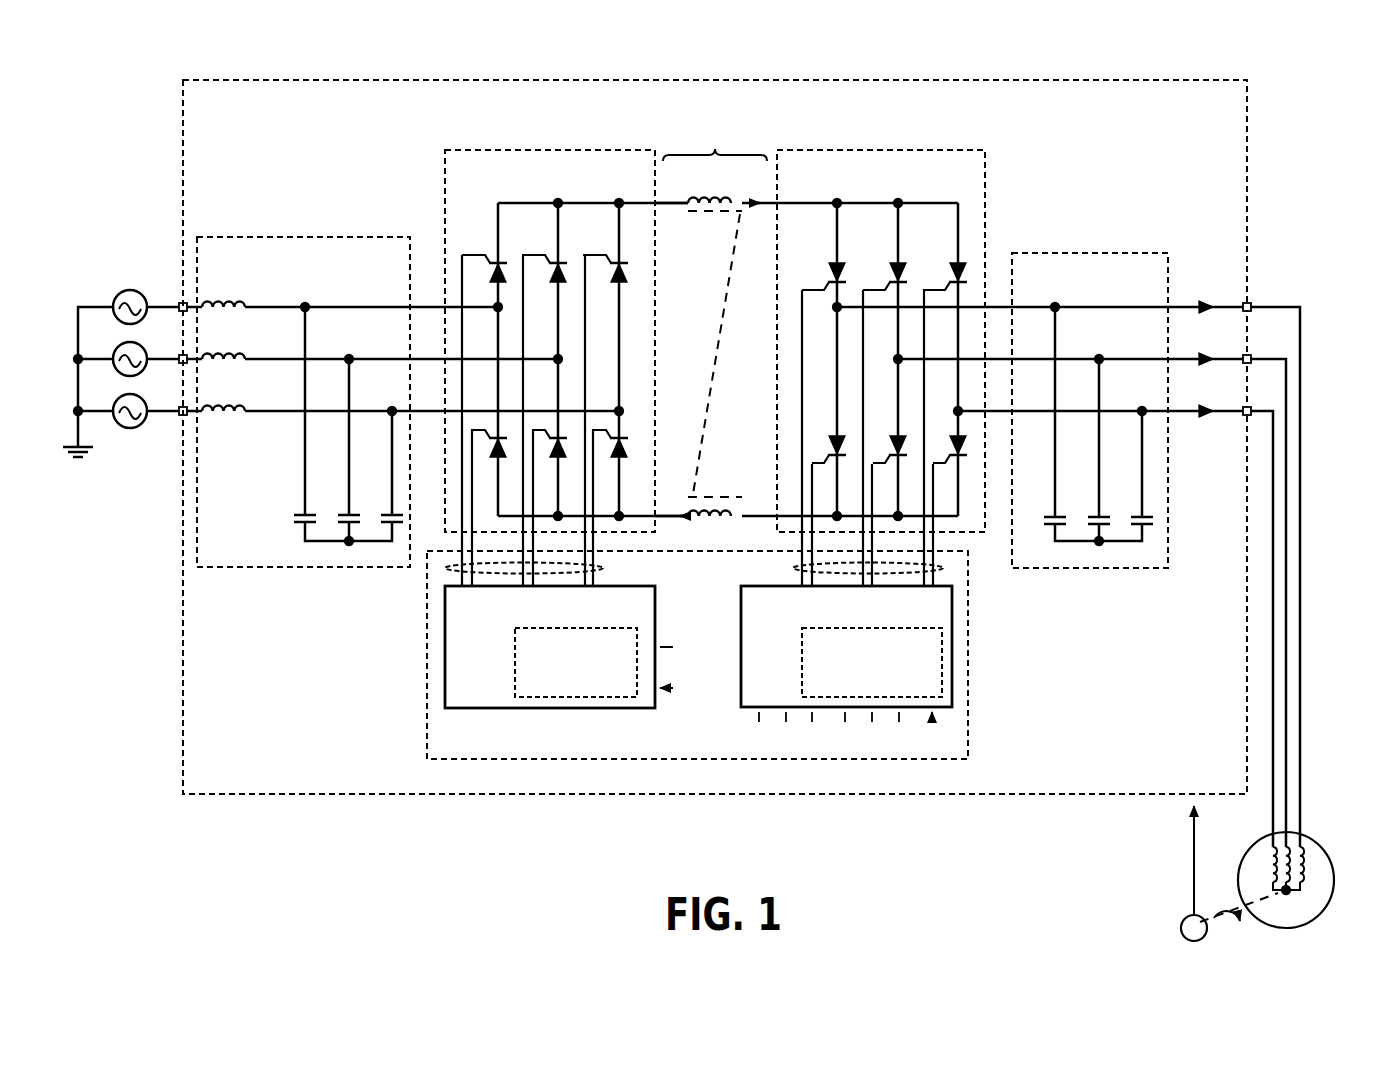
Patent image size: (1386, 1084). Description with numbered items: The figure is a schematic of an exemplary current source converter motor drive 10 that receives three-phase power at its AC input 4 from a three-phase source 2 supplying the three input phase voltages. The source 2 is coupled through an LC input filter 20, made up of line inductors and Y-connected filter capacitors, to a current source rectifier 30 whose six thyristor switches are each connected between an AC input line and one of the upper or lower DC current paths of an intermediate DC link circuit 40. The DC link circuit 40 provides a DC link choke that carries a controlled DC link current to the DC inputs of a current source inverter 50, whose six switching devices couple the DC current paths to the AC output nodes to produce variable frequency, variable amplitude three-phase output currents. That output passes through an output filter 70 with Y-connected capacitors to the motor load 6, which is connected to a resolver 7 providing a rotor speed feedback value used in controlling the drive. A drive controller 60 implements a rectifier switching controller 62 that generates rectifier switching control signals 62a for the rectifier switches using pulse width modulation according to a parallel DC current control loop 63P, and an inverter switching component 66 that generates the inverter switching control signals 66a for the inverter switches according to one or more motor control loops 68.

The three-phase source 2 is at (110, 289).
The three-phase AC input 4 is at (170, 427).
The motor load 6 is at (1334, 877).
The resolver 7 is at (1181, 930).
The current source converter (CSC) motor drive 10 is at (262, 80).
The LC input filter 20 is at (304, 237).
The current source rectifier 30 is at (549, 150).
The intermediate DC link circuit 40 is at (715, 149).
The current source inverter 50 is at (880, 150).
The drive controller 60 is at (427, 738).
The rectifier switching controller 62 is at (656, 603).
The rectifier switching control signals 62a is at (603, 570).
The parallel DC current control loop 63P is at (515, 666).
The inverter switching component 66 is at (741, 601).
The inverter switching control signals 66a is at (793, 570).
The motor control loops 68 is at (802, 658).
The output filter 70 is at (1089, 255).